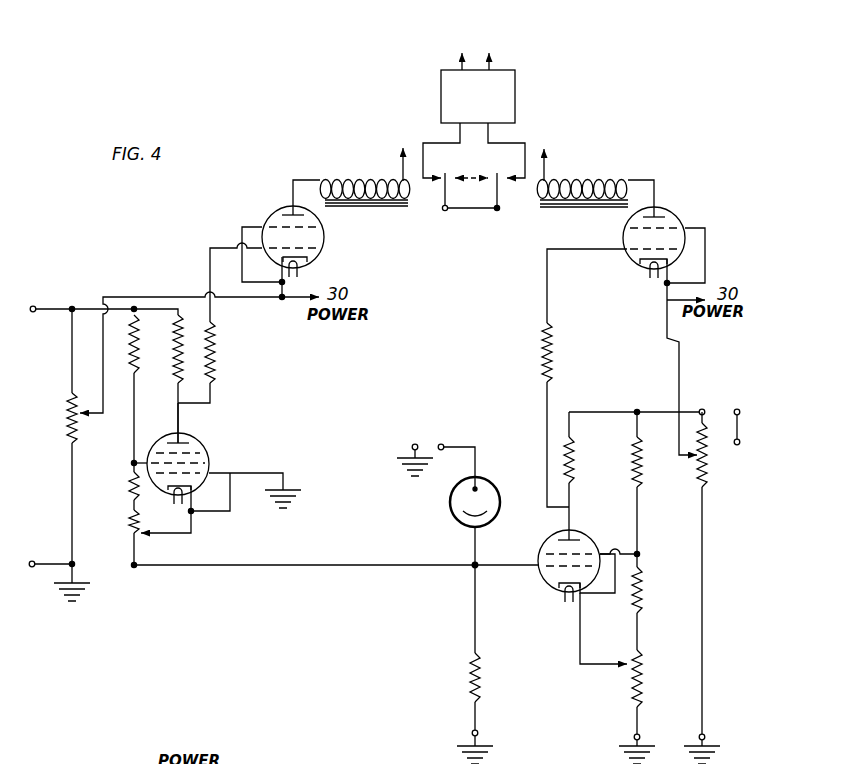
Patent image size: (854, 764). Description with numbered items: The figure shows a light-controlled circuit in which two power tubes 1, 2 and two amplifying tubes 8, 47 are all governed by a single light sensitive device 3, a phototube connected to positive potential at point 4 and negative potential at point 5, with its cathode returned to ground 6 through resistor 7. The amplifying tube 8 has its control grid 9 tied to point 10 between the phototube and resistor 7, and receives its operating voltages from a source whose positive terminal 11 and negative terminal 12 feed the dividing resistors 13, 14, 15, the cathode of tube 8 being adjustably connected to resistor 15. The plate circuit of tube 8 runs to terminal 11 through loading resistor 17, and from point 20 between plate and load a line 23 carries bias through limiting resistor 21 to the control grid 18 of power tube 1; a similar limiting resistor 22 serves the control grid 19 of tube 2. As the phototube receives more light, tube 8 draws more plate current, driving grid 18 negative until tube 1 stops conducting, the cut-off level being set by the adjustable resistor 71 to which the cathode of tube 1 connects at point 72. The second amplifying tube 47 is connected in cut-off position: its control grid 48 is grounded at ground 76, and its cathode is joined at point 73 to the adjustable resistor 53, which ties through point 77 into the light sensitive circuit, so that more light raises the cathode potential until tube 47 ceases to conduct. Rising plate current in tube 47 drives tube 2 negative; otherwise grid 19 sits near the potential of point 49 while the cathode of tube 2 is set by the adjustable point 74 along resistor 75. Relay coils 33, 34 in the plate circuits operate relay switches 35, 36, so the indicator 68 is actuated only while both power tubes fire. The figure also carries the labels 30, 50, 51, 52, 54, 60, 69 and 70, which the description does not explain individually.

The power tube 1 is at (679, 214).
The power tube 2 is at (270, 218).
The light sensitive device 3 is at (451, 512).
The point of positive potential 4 is at (447, 445).
The point of negative potential 5 is at (410, 445).
The ground 6 is at (478, 743).
The resistor 7 is at (482, 690).
The amplifying tube 8 is at (586, 531).
The control grid 9 is at (540, 580).
The point 10 is at (468, 565).
The positive terminal 11 is at (687, 410).
The negative terminal 12 is at (733, 411).
The dividing resistor 13 is at (632, 478).
The dividing resistor 14 is at (645, 602).
The dividing resistor 15 is at (645, 672).
The loading resistor 17 is at (576, 452).
The control grid 18 is at (640, 262).
The control grid 19 is at (307, 259).
The point 20 is at (571, 507).
The limiting resistor 21 is at (553, 378).
The limiting resistor 22 is at (218, 362).
The line 23 is at (551, 405).
The power supply 30 is at (471, 39).
The relay coil 33 is at (586, 208).
The relay coil 34 is at (381, 207).
The relay switch 35 is at (497, 211).
The relay switch 36 is at (445, 211).
The amplifying tube 47 is at (206, 440).
The control grid 48 is at (200, 472).
The point 49 is at (36, 306).
The B- supply lead 50 is at (40, 560).
The resistor 51 is at (160, 322).
The resistor 52 is at (128, 493).
The adjustable resistor 53 is at (129, 528).
The ground connection 54 is at (78, 584).
The resistor 60 is at (188, 353).
The indicator 68 is at (510, 82).
The conductor 69 is at (210, 270).
The conductor 70 is at (177, 297).
The adjustable resistor 71 is at (708, 466).
The point 72 is at (697, 457).
The point 73 is at (142, 535).
The adjustable point 74 is at (82, 414).
The resistor 75 is at (70, 434).
The ground 76 is at (292, 490).
The point 77 is at (137, 566).